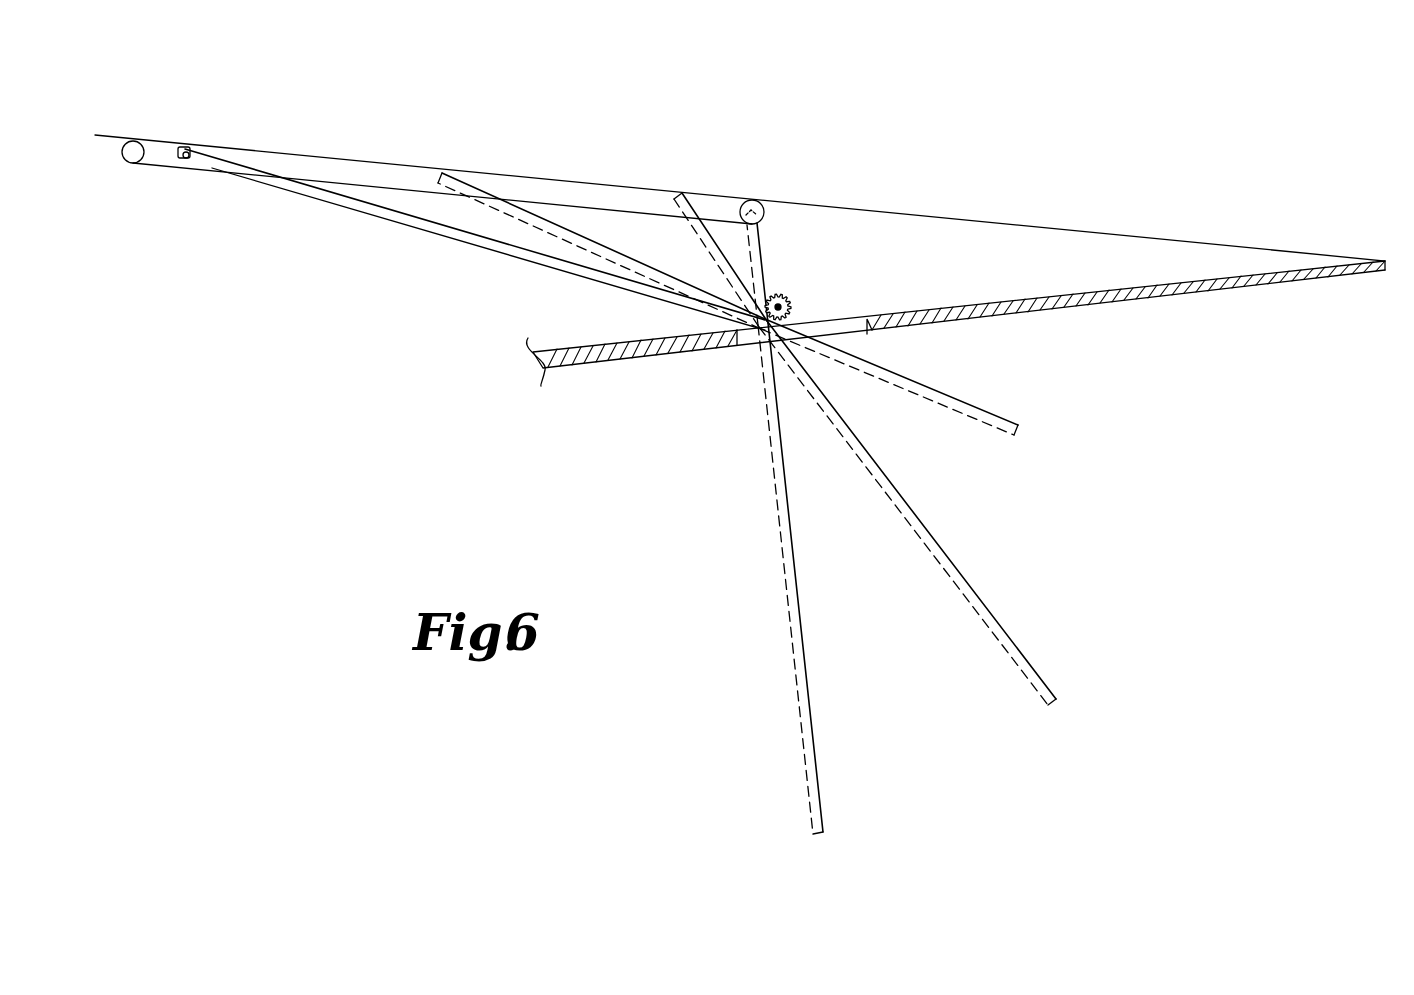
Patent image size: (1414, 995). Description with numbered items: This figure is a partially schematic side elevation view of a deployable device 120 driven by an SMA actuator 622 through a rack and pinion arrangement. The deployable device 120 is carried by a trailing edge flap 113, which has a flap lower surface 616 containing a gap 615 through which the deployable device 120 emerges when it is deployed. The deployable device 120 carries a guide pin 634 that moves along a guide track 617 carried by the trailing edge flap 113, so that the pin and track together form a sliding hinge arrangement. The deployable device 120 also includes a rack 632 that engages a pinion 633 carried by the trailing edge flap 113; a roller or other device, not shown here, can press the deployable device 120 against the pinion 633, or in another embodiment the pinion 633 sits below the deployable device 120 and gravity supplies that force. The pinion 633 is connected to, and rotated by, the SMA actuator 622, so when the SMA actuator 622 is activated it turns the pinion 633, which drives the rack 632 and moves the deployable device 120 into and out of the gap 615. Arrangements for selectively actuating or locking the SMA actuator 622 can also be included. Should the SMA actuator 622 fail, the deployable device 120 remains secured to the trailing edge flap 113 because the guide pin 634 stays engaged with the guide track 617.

The trailing edge flap 113 is at (1172, 247).
The guide track 617 is at (347, 170).
The guide pin 634 is at (180, 148).
The rack 632 is at (395, 207).
The deployable device 120 is at (432, 232).
The pinion 633 is at (785, 298).
The flap lower surface 616 is at (1207, 293).
The gap 615 is at (753, 338).
The SMA actuator 622 is at (792, 307).